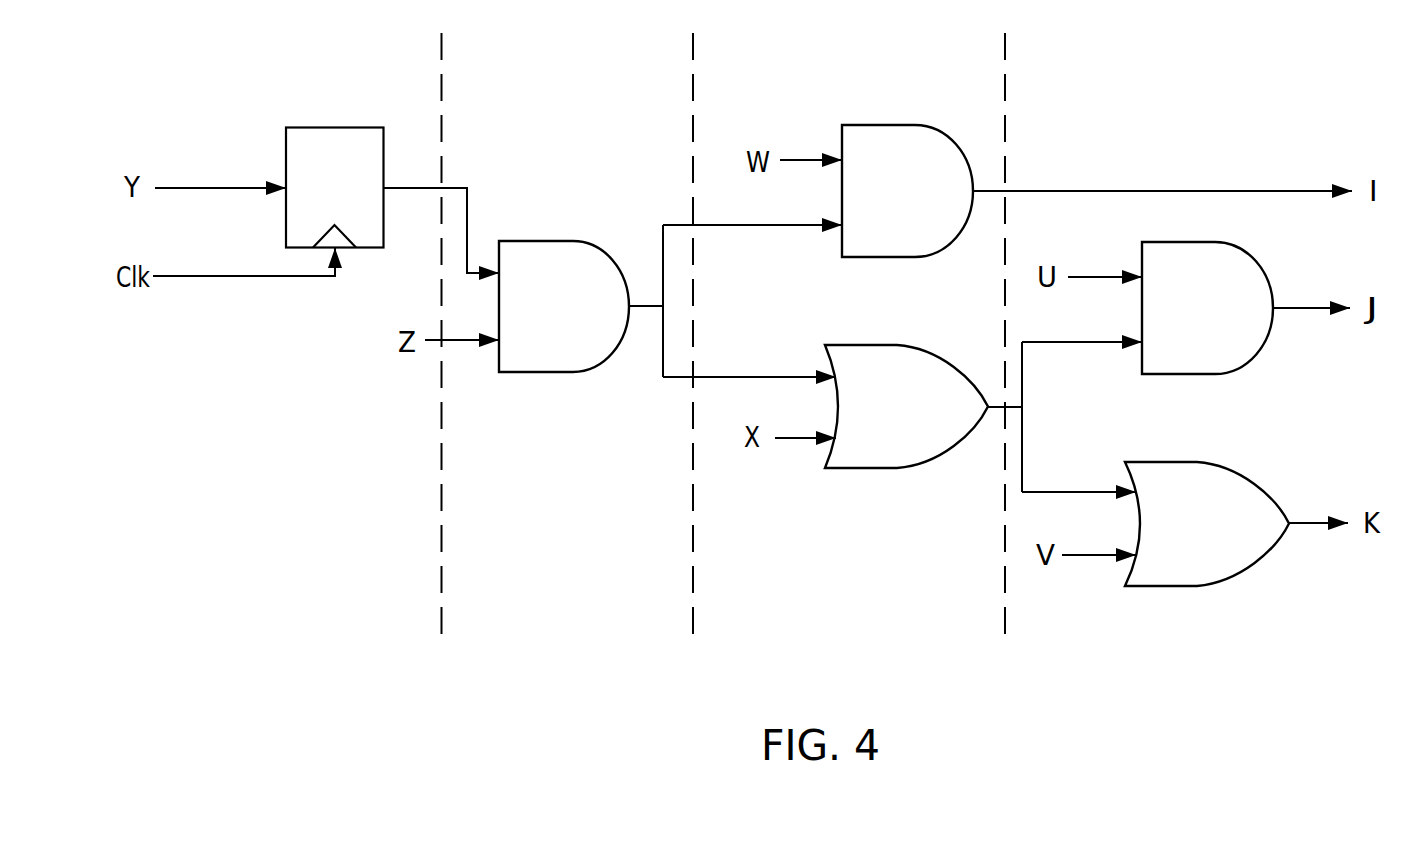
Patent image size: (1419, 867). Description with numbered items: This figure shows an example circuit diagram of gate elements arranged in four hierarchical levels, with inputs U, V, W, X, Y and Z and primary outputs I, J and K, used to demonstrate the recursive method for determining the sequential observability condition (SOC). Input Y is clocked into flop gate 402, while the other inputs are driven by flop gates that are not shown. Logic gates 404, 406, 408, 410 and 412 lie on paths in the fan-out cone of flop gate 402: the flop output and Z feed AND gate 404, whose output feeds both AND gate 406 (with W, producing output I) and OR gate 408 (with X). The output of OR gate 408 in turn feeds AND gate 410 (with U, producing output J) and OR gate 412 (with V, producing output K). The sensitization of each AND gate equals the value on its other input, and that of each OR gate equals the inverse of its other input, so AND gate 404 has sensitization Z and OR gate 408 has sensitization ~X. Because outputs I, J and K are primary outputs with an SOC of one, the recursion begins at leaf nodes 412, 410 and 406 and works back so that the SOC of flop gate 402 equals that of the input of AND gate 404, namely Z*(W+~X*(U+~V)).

The flop gate 402 is at (335, 128).
The AND gate 404 is at (564, 306).
The AND gate 406 is at (907, 191).
The OR gate 408 is at (906, 406).
The AND gate 410 is at (1207, 308).
The OR gate 412 is at (1207, 524).